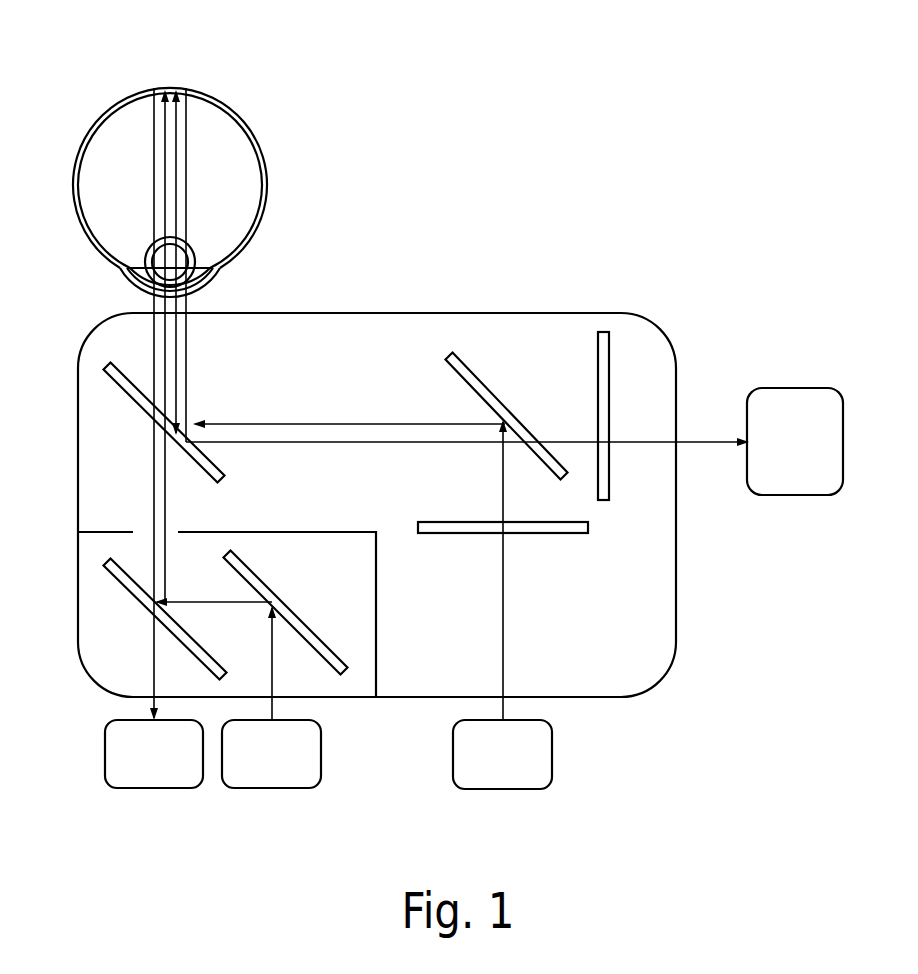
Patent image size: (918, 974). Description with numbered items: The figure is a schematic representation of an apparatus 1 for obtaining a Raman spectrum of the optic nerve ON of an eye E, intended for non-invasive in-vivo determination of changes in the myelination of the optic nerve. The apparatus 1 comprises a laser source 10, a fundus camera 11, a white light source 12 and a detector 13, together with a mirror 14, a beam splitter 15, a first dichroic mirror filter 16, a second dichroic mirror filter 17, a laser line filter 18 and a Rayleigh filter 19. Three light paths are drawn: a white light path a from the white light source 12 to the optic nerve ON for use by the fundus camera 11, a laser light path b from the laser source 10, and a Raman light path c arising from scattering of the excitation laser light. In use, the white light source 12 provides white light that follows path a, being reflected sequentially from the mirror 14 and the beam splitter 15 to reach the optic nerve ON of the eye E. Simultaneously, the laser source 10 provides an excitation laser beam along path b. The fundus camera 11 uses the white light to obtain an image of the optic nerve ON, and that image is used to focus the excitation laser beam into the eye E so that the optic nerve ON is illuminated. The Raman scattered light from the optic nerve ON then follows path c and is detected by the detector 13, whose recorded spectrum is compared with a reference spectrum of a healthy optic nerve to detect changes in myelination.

The apparatus 1 is at (668, 266).
The laser source 10 is at (488, 769).
The fundus camera 11 is at (139, 769).
The white light source 12 is at (256, 769).
The detector 13 is at (780, 455).
The mirror 14 is at (323, 622).
The beam splitter 15 is at (100, 647).
The first dichroic mirror filter 16 is at (105, 464).
The second dichroic mirror filter 17 is at (433, 414).
The laser line filter 18 is at (460, 582).
The Rayleigh filter 19 is at (558, 414).
The eye E is at (254, 131).
The optic nerve ON is at (163, 86).
The white light path a is at (150, 530).
The laser light path b is at (505, 624).
The Raman light path c is at (192, 210).